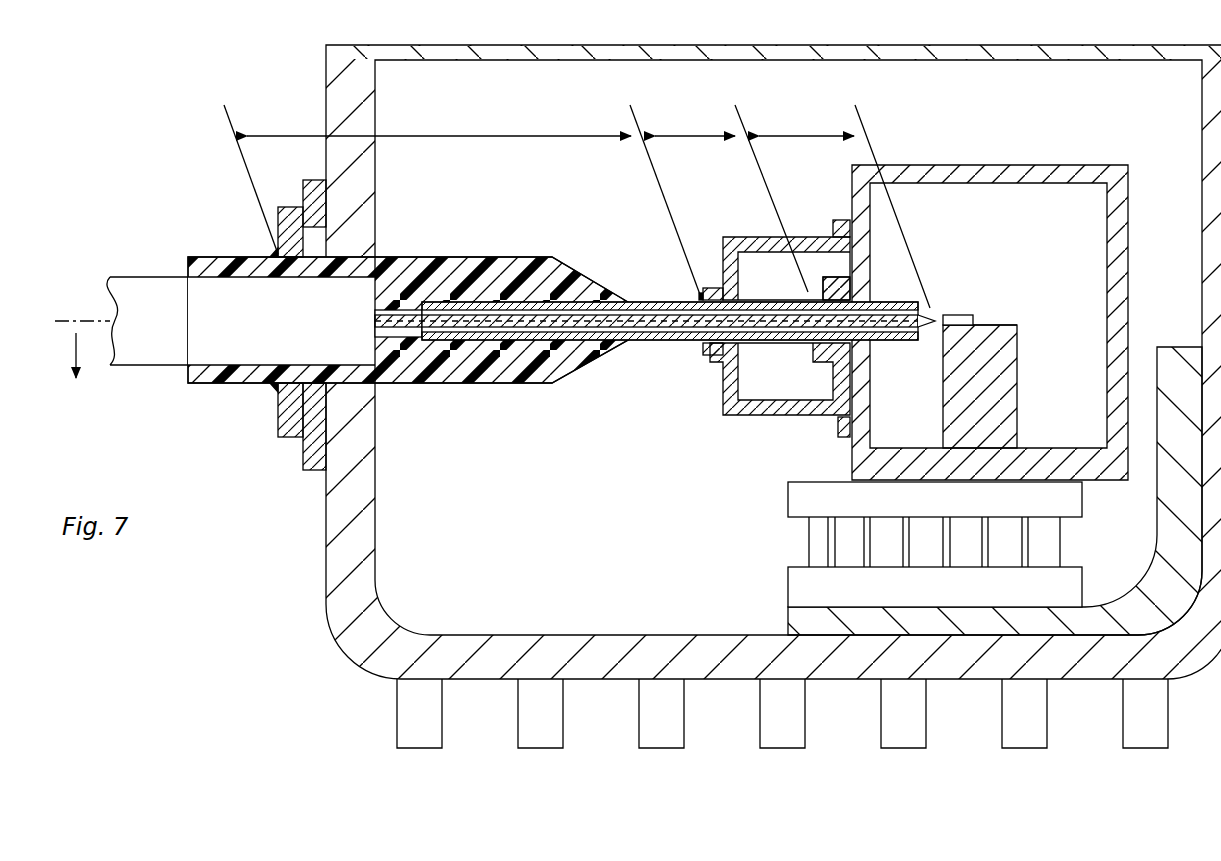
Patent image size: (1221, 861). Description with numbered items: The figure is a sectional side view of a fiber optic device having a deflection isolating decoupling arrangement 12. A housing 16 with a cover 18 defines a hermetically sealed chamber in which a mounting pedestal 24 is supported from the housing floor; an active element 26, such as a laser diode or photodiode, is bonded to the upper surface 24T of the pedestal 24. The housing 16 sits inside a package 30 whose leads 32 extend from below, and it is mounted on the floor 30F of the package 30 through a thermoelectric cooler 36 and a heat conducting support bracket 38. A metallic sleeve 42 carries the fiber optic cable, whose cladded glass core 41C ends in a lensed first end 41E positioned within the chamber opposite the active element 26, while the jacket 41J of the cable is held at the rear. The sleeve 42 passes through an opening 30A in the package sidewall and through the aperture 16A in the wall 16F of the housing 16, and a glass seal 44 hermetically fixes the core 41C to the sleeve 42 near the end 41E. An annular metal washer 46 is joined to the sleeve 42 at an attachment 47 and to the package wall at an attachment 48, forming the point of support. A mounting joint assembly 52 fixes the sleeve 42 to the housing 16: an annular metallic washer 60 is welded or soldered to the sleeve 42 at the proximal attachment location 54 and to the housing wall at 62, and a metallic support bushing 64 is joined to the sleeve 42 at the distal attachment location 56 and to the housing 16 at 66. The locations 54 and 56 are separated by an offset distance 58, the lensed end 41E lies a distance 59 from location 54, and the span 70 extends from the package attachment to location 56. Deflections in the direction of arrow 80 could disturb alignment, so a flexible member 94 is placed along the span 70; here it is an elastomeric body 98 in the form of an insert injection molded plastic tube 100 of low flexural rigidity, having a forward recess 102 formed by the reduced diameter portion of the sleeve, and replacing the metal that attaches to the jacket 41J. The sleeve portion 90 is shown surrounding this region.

The deflection isolating decoupling arrangement 12 is at (529, 323).
The housing 16 is at (1018, 301).
The aperture 16A is at (870, 352).
The wall of housing 16F is at (860, 405).
The cover 18 is at (972, 167).
The mounting pedestal 24 is at (1000, 400).
The upper surface of pedestal 24T is at (1020, 326).
The active element 26 is at (972, 316).
The package 30 is at (704, 362).
The opening 30A is at (358, 226).
The floor of package 30F is at (350, 555).
The leads 32 is at (708, 713).
The thermoelectric cooler 36 is at (780, 544).
The heat conducting support bracket 38 is at (807, 622).
The cladded glass core 41C is at (692, 340).
The first end of fiber 41E is at (938, 320).
The jacket of cable 41J is at (165, 307).
The metallic sleeve 42 is at (632, 362).
The glass seal 44 is at (893, 343).
The annular metal washer 46 is at (298, 213).
The attachment of sleeve to washer 47 is at (273, 250).
The attachment of washer to package wall 48 is at (318, 175).
The mounting joint assembly 52 is at (748, 340).
The first proximal attachment location 54 is at (805, 296).
The second distal attachment location 56 is at (702, 297).
The offset distance 58 is at (700, 135).
The distance from lensed end to proximal attachment 59 is at (815, 135).
The annular metallic washer 60 is at (830, 288).
The attachment of washer to housing 62 is at (847, 372).
The metallic support bushing 64 is at (740, 237).
The attachment of bushing to housing 66 is at (845, 433).
The span 70 is at (492, 135).
The reference arrow 80 is at (78, 362).
The elastomeric sleeve 90 is at (552, 257).
The flexible member 94 is at (500, 245).
The elastomeric body 98 is at (646, 380).
The insert injection molded plastic tube 100 is at (478, 385).
The forward recess 102 is at (618, 343).